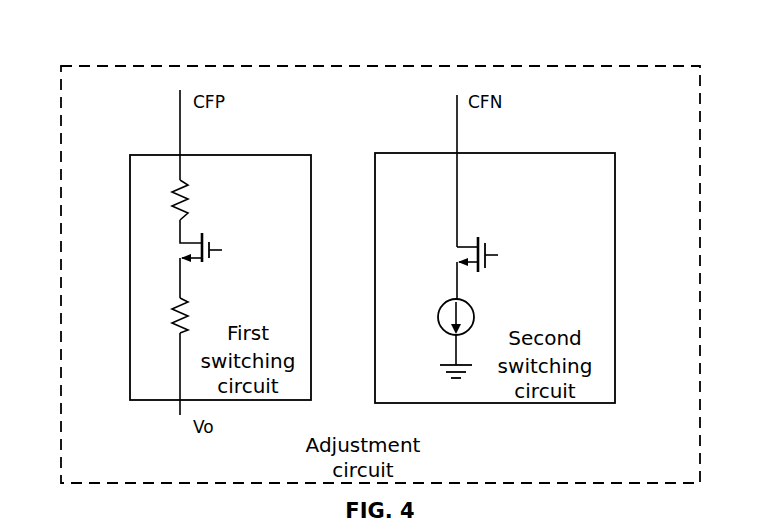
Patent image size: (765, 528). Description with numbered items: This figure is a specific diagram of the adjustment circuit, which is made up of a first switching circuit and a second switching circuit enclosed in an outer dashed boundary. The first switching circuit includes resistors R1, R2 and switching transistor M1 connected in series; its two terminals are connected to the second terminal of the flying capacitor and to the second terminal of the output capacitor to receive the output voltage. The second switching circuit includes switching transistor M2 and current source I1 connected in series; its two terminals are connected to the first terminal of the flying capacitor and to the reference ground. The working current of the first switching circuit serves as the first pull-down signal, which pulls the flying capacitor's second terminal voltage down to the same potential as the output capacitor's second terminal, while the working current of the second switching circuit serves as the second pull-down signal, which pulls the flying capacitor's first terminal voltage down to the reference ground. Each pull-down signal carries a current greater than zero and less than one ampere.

The resistor R1 is at (197, 200).
The resistor R2 is at (196, 315).
The switching transistor M1 is at (215, 241).
The switching transistor M2 is at (491, 254).
The current source I1 is at (469, 317).